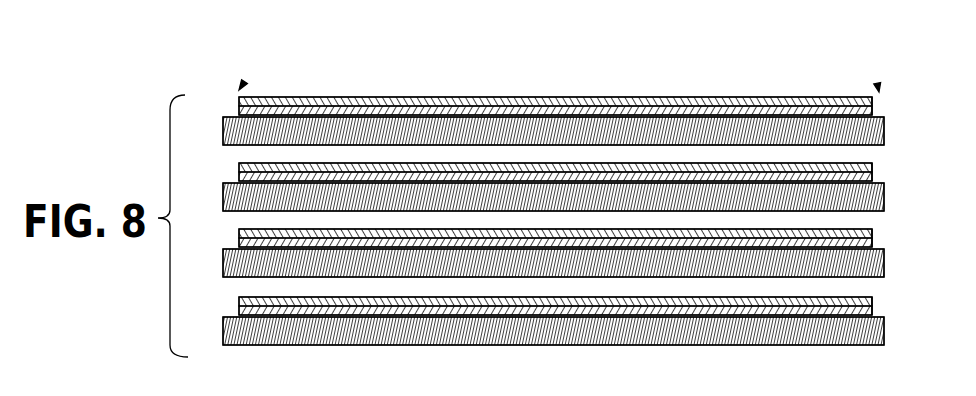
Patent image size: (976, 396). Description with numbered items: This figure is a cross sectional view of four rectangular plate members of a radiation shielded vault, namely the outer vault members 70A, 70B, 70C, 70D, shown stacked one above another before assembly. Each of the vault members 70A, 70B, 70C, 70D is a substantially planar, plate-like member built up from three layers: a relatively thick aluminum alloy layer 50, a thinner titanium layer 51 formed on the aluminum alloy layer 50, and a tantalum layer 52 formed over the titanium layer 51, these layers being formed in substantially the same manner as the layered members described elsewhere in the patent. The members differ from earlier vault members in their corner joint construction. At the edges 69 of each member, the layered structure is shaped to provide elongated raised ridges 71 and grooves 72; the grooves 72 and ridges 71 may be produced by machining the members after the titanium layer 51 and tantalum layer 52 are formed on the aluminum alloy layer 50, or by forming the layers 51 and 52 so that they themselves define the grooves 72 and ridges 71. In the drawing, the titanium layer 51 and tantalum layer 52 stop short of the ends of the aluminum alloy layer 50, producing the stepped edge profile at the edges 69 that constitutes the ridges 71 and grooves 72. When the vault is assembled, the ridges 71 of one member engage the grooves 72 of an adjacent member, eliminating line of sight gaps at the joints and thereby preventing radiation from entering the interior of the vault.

The aluminum alloy layer 50 is at (226, 127).
The titanium layer 51 is at (240, 114).
The tantalum layer 52 is at (240, 104).
The edges 69 is at (245, 82).
The outer vault member 70A is at (885, 132).
The outer vault member 70B is at (885, 205).
The outer vault member 70C is at (885, 271).
The outer vault member 70D is at (885, 340).
The elongated raised ridges 71 is at (873, 112).
The grooves 72 is at (873, 102).